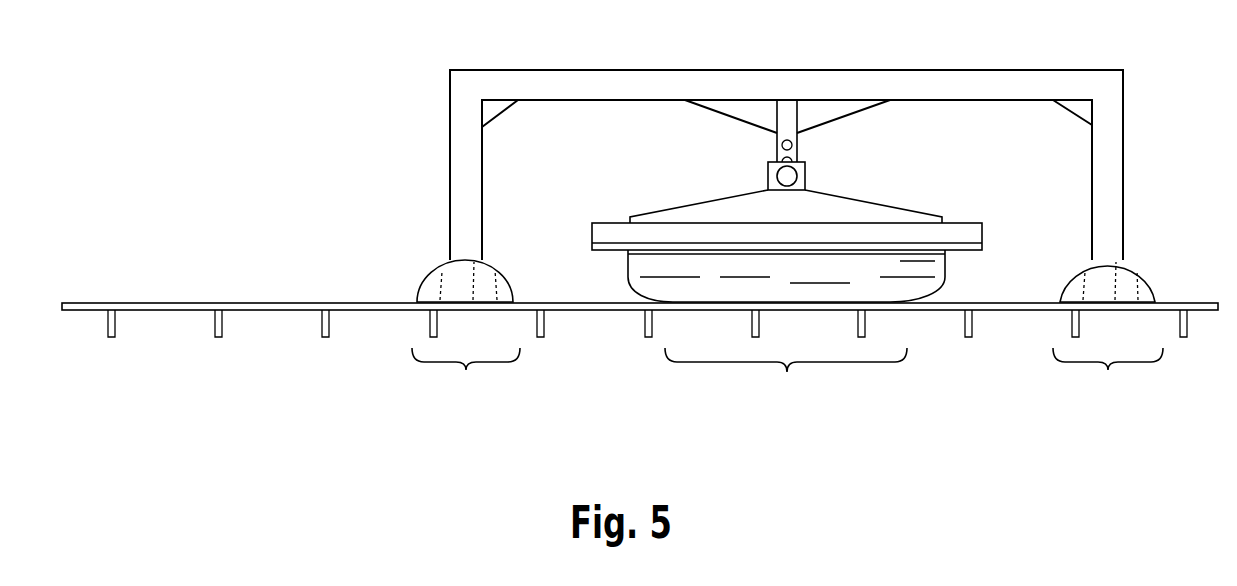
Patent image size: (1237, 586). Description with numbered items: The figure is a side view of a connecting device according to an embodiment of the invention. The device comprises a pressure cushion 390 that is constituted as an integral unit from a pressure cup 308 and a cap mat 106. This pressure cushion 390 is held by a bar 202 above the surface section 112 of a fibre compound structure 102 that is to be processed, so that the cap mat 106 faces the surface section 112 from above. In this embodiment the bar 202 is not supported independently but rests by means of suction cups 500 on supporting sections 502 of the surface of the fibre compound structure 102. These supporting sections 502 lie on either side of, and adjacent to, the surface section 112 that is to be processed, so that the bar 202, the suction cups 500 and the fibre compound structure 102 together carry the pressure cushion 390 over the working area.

The fibre compound structure 102 is at (160, 303).
The cap mat 106 is at (910, 265).
The surface section 112 is at (786, 381).
The bar 202 is at (950, 83).
The pressure cup 308 is at (957, 235).
The pressure cushion 390 is at (656, 177).
The suction cups 500 is at (457, 282).
The supporting sections 502 is at (787, 381).